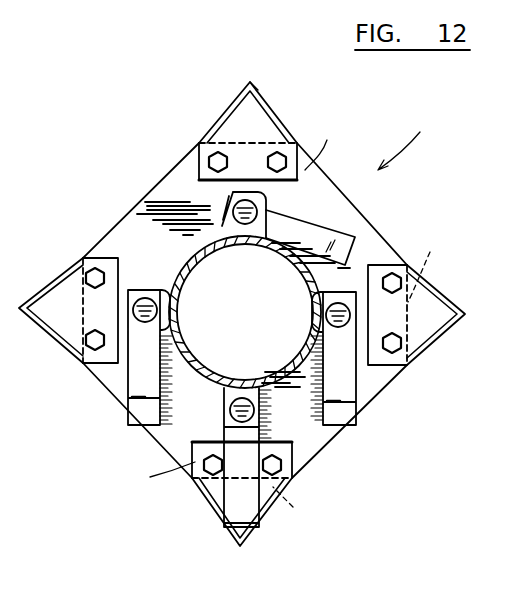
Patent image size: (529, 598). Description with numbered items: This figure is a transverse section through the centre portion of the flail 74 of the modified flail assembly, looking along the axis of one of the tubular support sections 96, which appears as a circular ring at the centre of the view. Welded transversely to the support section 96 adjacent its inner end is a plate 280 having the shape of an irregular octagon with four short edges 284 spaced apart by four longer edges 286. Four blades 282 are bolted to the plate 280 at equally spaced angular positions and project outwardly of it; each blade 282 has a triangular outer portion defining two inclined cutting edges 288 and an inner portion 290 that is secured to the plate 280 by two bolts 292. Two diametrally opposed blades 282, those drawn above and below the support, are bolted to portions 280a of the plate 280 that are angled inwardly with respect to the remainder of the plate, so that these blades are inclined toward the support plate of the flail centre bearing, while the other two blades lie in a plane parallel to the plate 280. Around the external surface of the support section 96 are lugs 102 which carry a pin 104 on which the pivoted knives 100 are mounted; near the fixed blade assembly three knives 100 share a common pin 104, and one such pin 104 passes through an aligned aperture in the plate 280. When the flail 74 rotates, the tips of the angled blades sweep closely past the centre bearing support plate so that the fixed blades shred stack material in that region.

The flail 74 is at (417, 142).
The tubular support section 96 is at (173, 308).
The pivoted knife 100 is at (308, 233).
The lug 102 is at (252, 395).
The pin 104 is at (245, 232).
The plate 280 is at (192, 250).
The angled portion of plate 280a is at (244, 305).
The blade 282 is at (248, 107).
The short edge 284 is at (375, 385).
The longer edge 286 is at (137, 206).
The inclined cutting edge 288 is at (231, 103).
The inner portion of blade 290 is at (205, 157).
The bolt 292 is at (272, 160).